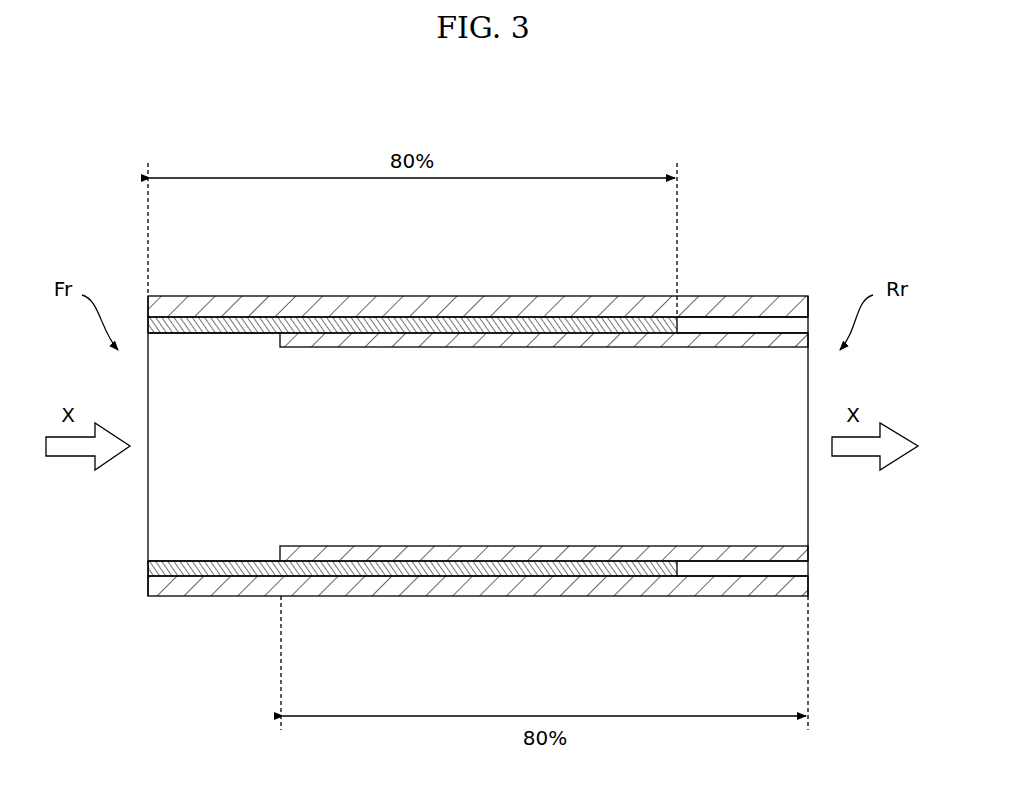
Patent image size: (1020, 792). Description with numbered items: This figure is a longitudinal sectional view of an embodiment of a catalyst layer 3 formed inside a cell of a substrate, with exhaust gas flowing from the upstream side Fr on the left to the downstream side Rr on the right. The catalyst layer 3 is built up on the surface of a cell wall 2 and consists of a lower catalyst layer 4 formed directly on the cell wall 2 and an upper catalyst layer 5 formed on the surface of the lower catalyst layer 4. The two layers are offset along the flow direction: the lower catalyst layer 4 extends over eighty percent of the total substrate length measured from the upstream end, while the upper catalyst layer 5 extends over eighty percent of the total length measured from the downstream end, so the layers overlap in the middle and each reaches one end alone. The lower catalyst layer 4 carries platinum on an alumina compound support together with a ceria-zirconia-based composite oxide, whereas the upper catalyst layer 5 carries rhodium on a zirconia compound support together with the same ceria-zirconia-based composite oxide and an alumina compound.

The cell wall 2 is at (756, 308).
The catalyst layer 3 is at (478, 449).
The lower catalyst layer 4 is at (465, 326).
The upper catalyst layer 5 is at (513, 338).